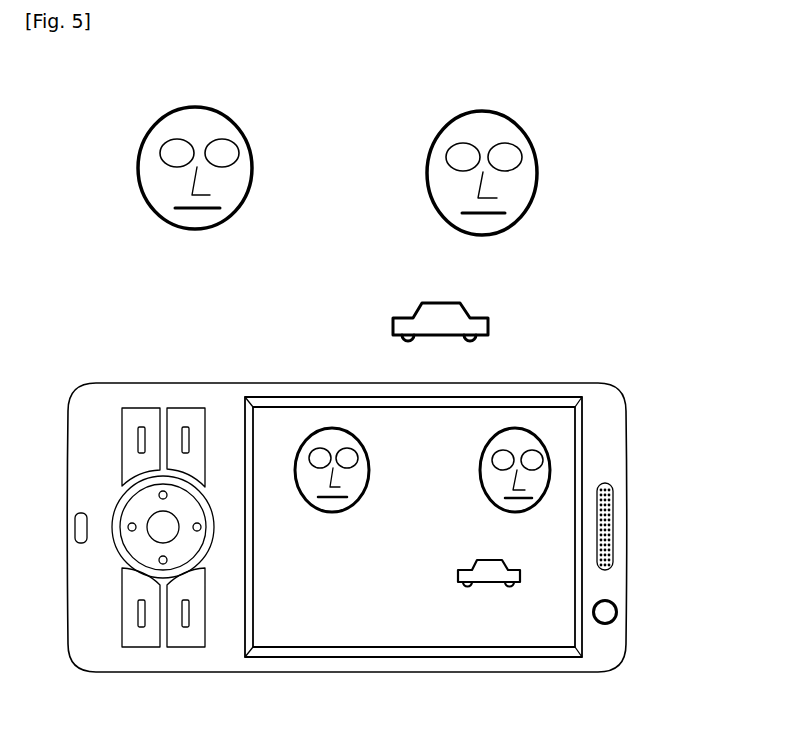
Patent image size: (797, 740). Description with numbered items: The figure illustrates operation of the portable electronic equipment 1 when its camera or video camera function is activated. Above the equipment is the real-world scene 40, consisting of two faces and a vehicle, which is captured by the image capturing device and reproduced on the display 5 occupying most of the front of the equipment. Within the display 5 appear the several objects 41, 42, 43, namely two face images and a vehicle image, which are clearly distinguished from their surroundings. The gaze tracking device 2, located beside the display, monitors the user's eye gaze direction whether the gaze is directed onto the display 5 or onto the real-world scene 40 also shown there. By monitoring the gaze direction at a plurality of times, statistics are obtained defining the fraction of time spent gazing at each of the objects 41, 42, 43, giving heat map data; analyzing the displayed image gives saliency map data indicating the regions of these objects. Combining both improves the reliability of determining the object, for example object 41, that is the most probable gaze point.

The real-world scene 40 is at (120, 122).
The portable electronic equipment 1 is at (622, 414).
The gaze tracking device 2 is at (622, 612).
The display 5 is at (555, 658).
The object 41 is at (301, 492).
The object 42 is at (485, 452).
The object 43 is at (457, 575).